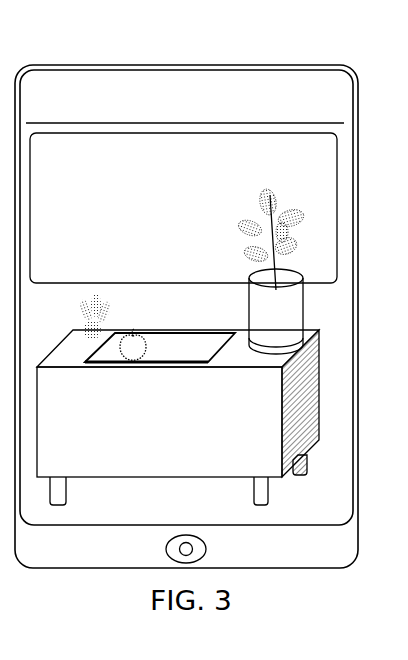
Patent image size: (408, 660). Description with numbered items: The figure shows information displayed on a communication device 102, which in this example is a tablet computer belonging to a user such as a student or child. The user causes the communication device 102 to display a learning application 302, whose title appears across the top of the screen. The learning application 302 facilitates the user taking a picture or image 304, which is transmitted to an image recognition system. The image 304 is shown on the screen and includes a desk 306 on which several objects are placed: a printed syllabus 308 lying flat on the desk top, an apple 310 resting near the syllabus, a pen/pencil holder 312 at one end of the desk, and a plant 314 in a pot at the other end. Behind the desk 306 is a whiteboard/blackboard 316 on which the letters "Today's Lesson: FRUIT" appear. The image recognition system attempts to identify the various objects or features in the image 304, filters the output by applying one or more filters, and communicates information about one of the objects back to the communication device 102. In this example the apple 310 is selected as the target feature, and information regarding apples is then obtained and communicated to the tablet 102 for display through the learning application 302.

The communication device 102 is at (291, 68).
The learning application 302 is at (88, 83).
The image 304 is at (326, 504).
The desk 306 is at (197, 476).
The printed syllabus 308 is at (172, 343).
The apple 310 is at (137, 352).
The pen/pencil holder 312 is at (105, 332).
The plant 314 is at (242, 225).
The whiteboard/blackboard 316 is at (337, 163).